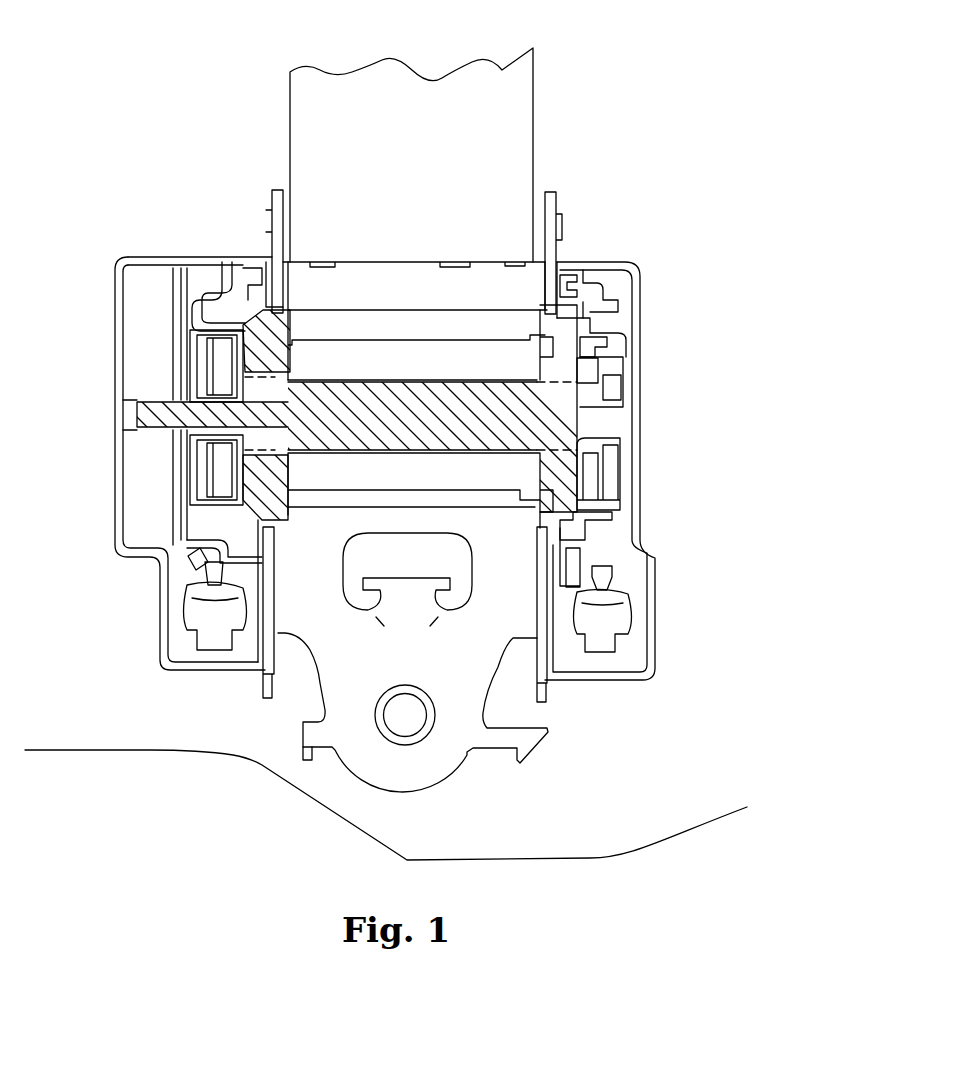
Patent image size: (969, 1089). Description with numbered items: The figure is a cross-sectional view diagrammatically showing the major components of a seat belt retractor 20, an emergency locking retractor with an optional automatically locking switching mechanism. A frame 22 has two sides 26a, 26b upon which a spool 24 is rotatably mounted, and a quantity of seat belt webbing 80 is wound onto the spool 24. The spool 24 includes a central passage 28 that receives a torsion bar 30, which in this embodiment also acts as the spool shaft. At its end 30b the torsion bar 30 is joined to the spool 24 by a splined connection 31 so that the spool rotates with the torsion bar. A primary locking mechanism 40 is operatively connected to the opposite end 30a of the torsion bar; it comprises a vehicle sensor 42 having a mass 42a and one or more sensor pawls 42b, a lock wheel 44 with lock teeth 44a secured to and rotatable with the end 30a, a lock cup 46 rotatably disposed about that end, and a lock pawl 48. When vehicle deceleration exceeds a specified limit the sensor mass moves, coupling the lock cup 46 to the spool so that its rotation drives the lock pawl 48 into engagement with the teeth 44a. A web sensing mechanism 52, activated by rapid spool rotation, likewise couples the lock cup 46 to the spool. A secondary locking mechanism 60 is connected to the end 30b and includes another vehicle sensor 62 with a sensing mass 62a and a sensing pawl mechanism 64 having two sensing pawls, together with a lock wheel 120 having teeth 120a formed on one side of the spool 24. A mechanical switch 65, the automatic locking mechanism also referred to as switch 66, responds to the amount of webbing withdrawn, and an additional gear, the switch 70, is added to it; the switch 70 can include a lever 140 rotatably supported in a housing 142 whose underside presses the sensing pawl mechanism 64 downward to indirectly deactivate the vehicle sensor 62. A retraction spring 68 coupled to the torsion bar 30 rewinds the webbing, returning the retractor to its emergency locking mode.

The seat belt retractor 20 is at (203, 243).
The frame 22 is at (427, 787).
The spool 24 is at (330, 338).
The first frame side 26a is at (270, 187).
The second frame side 26b is at (558, 192).
The central passage 28 is at (410, 378).
The torsion bar 30 is at (593, 429).
The torsion bar end 30a is at (600, 403).
The torsion bar end 30b is at (262, 413).
The splined connection 31 is at (280, 465).
The primary locking mechanism 40 is at (578, 268).
The vehicle sensor 42 is at (613, 618).
The mass 42a is at (618, 598).
The sensor pawl 42b is at (612, 578).
The lock wheel 44 is at (560, 345).
The lock teeth 44a is at (575, 325).
The lock cup 46 is at (620, 508).
The lock pawl 48 is at (568, 565).
The web sensing mechanism 52 is at (612, 348).
The secondary locking mechanism 60 is at (177, 585).
The vehicle sensor 62 is at (187, 633).
The sensing mass 62a is at (203, 605).
The sensing pawl mechanism 64 is at (195, 553).
The mechanical switch 65 is at (195, 292).
The ALR mechanism switch 66 is at (160, 245).
The retraction spring 68 is at (143, 372).
The switch 70 is at (172, 327).
The seat belt webbing 80 is at (357, 97).
The lock wheel 120 is at (240, 297).
The teeth 120a is at (247, 318).
The lever 140 is at (185, 540).
The housing 142 is at (116, 470).